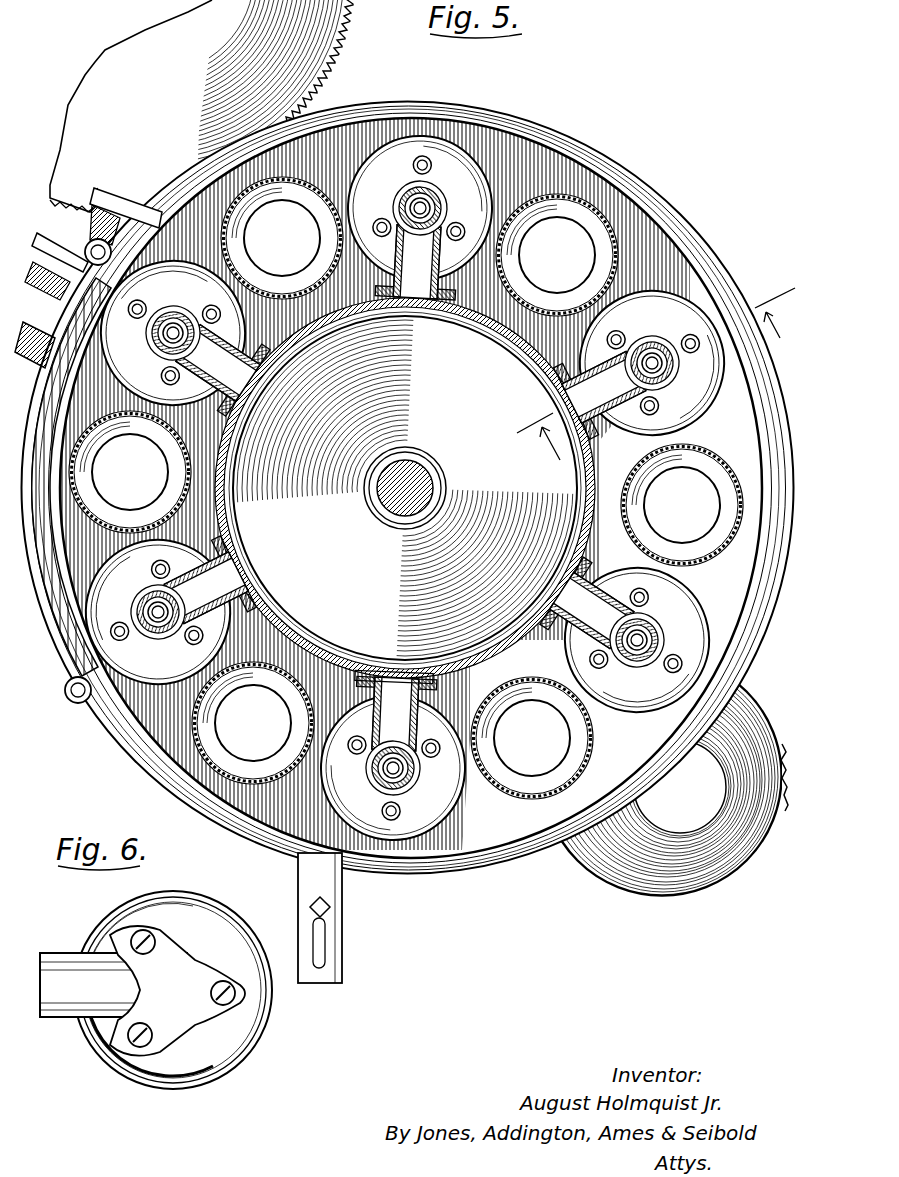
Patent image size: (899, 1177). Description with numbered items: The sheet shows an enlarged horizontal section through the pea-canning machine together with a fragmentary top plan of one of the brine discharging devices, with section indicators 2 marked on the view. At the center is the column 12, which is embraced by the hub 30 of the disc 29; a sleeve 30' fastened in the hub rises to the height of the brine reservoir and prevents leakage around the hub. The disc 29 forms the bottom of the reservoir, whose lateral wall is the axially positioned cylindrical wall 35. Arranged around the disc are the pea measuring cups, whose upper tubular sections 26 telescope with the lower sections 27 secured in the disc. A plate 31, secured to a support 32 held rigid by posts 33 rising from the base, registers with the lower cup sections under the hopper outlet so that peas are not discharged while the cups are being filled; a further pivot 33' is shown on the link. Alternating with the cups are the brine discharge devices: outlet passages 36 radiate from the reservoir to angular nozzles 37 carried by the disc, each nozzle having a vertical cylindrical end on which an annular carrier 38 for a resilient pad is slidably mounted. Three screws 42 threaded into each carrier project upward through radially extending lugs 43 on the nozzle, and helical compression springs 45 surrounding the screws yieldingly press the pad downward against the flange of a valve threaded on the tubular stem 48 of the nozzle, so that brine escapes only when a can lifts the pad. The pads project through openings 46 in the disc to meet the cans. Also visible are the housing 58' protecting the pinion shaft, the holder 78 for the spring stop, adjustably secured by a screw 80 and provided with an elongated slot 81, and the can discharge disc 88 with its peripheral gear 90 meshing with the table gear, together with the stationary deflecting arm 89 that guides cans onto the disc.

In FIG. 5, the section line 2 is at (656, 374).
In FIG. 5, the column 12 is at (404, 516).
In FIG. 5, the upper tubular sections 26 is at (520, 802).
In FIG. 5, the lower sections 27 is at (593, 745).
In FIG. 5, the disc 29 is at (670, 246).
In FIG. 5, the hub 30 is at (425, 488).
In FIG. 5, the sleeve 30' is at (433, 488).
In FIG. 5, the plate 31 is at (292, 418).
In FIG. 5, the support 32 is at (44, 580).
In FIG. 5, the posts 33 is at (88, 278).
In FIG. 5, the pivot 33' is at (64, 715).
In FIG. 5, the cylindrical wall 35 is at (316, 652).
In FIG. 5, the outlet passages 36 is at (420, 306).
In FIG. 5, the nozzles 37 is at (438, 680).
In FIG. 5, the annular carrier 38 is at (442, 820).
In FIG. 6, the annular carrier 38 is at (232, 1040).
In FIG. 6, the screws 42 is at (130, 938).
In FIG. 6, the radially extending lugs 43 is at (150, 935).
In FIG. 5, the helical compression springs 45 is at (458, 226).
In FIG. 5, the openings 46 is at (662, 294).
In FIG. 5, the tubular stem 48 is at (405, 780).
In FIG. 5, the housing 58' is at (666, 776).
In FIG. 5, the holder 78 is at (343, 903).
In FIG. 5, the screw 80 is at (312, 905).
In FIG. 5, the elongated slot 81 is at (327, 952).
In FIG. 5, the can discharge disc 88 is at (172, 82).
In FIG. 5, the stationary deflecting arm 89 is at (124, 194).
In FIG. 5, the gear 90 is at (349, 16).